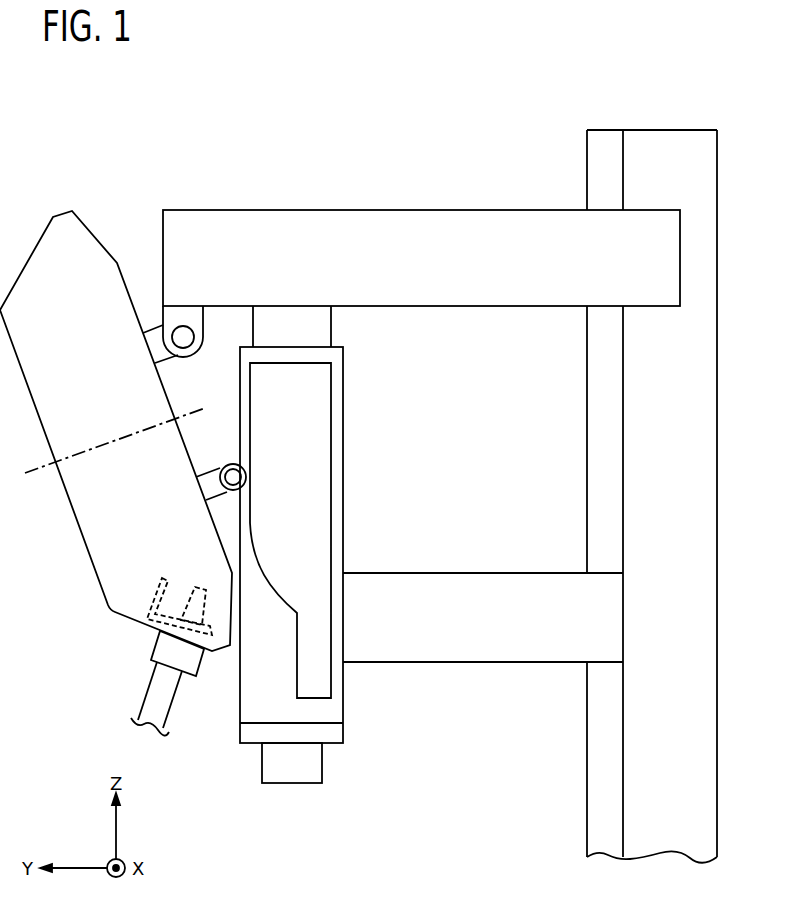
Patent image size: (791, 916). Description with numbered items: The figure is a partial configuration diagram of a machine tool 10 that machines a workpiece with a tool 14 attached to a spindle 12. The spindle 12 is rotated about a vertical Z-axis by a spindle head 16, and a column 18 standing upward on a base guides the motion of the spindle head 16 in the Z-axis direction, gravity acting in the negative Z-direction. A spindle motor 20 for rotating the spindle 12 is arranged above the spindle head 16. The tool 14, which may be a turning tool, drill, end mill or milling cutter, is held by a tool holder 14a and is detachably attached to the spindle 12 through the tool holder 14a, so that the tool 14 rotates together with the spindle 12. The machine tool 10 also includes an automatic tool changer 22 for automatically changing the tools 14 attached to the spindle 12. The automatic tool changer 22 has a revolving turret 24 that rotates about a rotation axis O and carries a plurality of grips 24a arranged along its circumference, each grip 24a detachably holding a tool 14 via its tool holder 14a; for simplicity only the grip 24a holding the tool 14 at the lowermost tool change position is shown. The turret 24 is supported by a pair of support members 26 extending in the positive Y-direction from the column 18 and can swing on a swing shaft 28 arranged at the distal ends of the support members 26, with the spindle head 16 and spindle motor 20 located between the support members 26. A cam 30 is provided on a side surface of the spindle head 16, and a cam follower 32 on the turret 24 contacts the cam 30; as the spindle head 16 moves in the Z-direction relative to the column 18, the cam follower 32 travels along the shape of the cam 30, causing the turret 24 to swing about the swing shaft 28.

The machine tool 10 is at (270, 89).
The spindle 12 is at (291, 775).
The tool 14 is at (152, 703).
The tool holder 14a is at (188, 679).
The spindle head 16 is at (346, 446).
The column 18 is at (673, 138).
The spindle motor 20 is at (323, 334).
The automatic tool changer 22 is at (26, 248).
The turret 24 is at (102, 590).
The grip 24a is at (155, 587).
The support member 26 is at (430, 226).
The swing shaft 28 is at (183, 337).
The cam 30 is at (278, 596).
The cam follower 32 is at (228, 465).